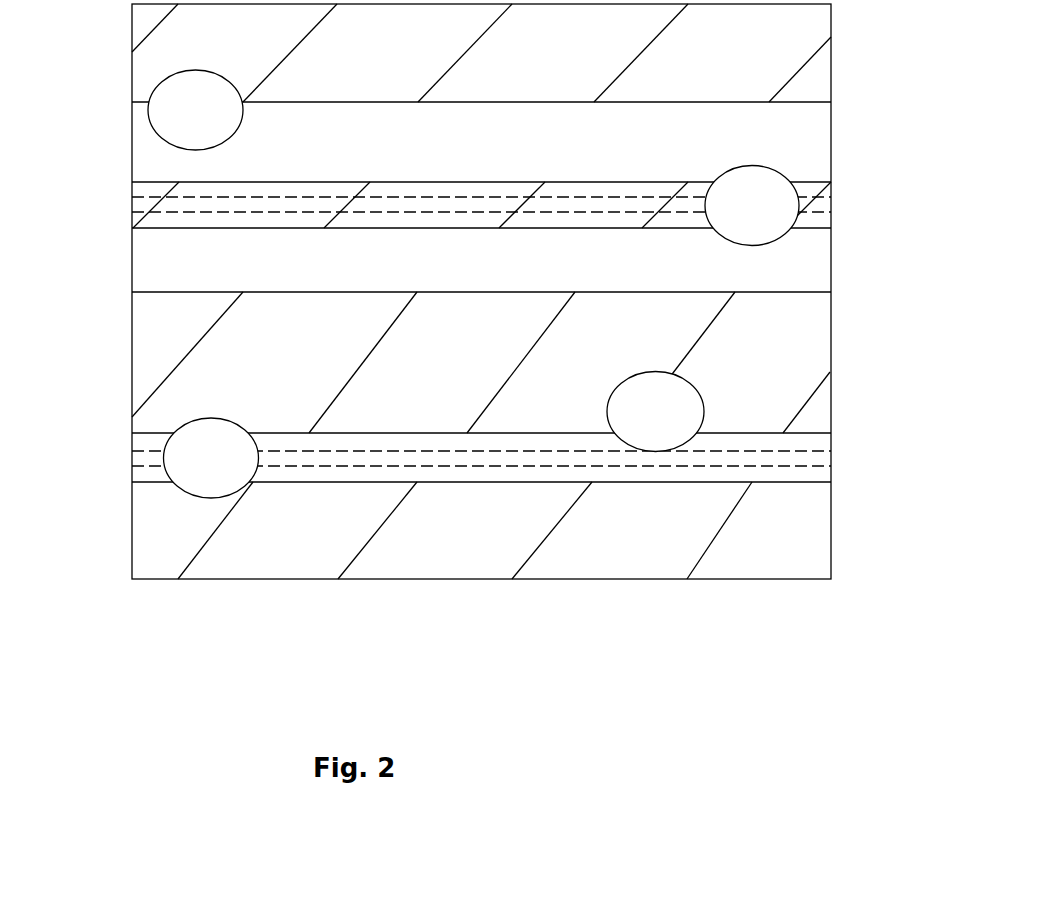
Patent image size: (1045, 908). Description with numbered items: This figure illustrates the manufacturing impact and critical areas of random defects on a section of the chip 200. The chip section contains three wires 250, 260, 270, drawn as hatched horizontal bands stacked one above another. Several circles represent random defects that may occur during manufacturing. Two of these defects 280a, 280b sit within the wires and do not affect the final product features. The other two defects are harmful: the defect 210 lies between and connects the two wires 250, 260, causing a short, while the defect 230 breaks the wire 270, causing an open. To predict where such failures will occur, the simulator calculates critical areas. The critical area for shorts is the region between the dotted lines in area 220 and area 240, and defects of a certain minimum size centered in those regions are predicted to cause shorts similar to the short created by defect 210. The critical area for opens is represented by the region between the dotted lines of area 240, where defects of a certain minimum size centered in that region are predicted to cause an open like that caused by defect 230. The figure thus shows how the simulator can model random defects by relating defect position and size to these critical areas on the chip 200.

The chip 200 is at (459, 703).
The defect 210 is at (720, 182).
The area 220 is at (847, 198).
The defect 230 is at (242, 435).
The area 240 is at (847, 451).
The wire 250 is at (115, 102).
The wire 260 is at (115, 228).
The wire 270 is at (115, 433).
The defect 280a is at (243, 116).
The defect 280b is at (608, 405).